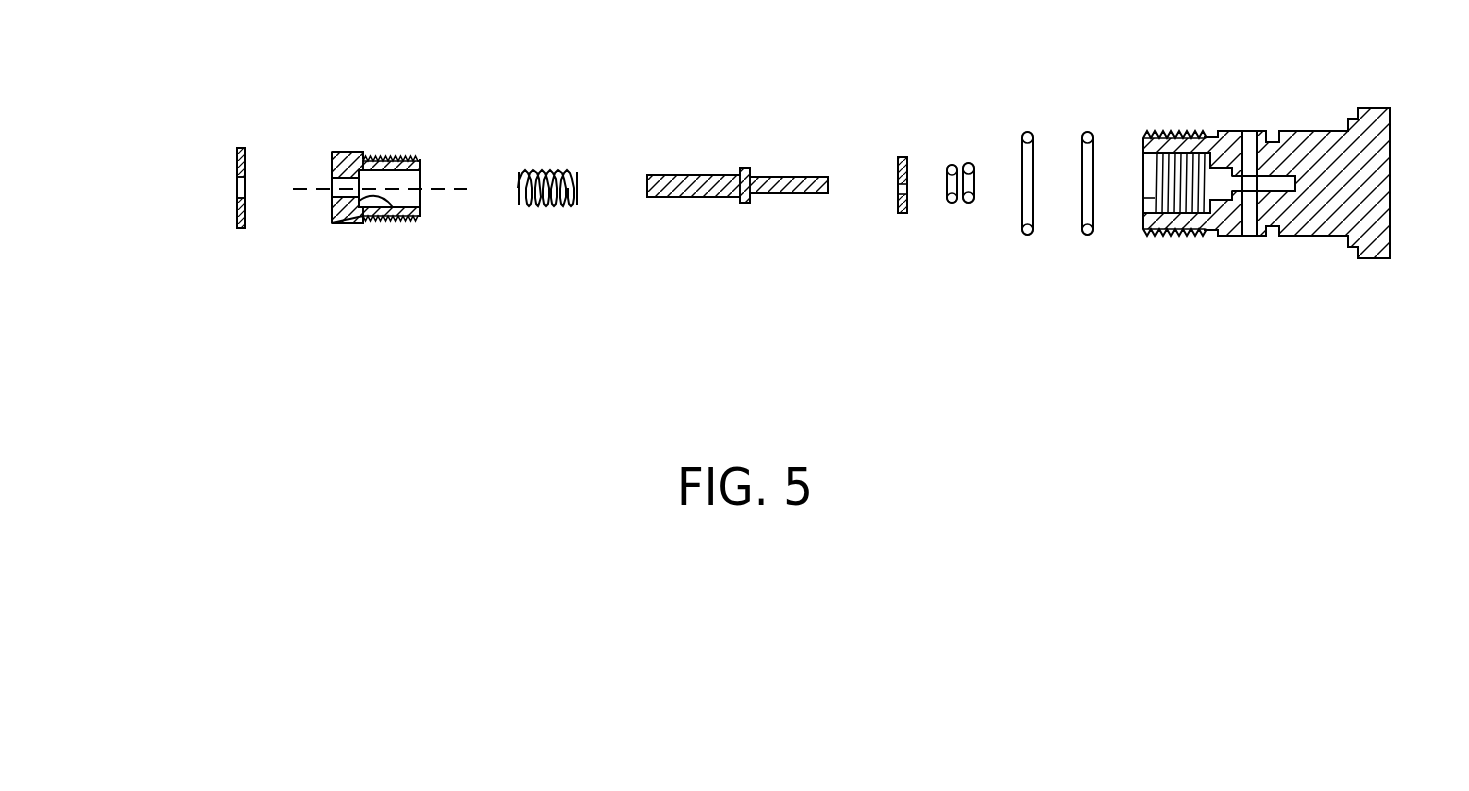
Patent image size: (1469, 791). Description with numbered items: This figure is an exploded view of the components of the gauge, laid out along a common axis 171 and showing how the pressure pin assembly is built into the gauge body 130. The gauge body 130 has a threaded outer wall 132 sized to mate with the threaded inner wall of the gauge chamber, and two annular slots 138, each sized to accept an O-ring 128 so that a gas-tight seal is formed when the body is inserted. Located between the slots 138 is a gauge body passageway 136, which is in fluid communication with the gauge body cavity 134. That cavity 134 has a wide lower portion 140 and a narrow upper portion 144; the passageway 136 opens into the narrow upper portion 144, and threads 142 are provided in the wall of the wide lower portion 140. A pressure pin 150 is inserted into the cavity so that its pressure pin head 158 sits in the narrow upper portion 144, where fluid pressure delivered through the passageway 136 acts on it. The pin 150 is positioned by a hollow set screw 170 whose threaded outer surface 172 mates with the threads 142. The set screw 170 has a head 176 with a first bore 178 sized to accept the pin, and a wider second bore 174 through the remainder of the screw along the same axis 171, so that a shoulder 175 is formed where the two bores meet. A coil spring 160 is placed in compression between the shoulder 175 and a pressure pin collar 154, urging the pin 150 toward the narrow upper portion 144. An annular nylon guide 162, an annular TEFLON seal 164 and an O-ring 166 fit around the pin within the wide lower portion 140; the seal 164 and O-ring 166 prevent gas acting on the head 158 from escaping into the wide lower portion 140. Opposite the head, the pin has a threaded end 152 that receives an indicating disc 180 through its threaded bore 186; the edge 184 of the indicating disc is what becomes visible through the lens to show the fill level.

The O-ring 128 is at (1087, 236).
The gauge body 130 is at (1390, 148).
The threaded outer wall 132 is at (1167, 235).
The gauge body cavity 134 is at (1154, 197).
The gauge body passageway 136 is at (1253, 133).
The slots 138 is at (1273, 236).
The wide lower portion 140 is at (1168, 140).
The threads 142 is at (1157, 186).
The narrow upper portion 144 is at (1288, 180).
The pressure pin 150 is at (692, 198).
The threaded end 152 is at (647, 185).
The pressure pin collar 154 is at (742, 168).
The pressure pin head 158 is at (828, 185).
The coil spring 160 is at (540, 207).
The annular nylon guide 162 is at (900, 213).
The annular TEFLON seal 164 is at (950, 203).
The O-ring 166 is at (968, 163).
The hollow set screw 170 is at (390, 236).
The axis 171 is at (444, 190).
The threaded outer surface 172 is at (387, 158).
The second bore 174 is at (412, 188).
The shoulder 175 is at (388, 216).
The head 176 is at (343, 225).
The first bore 178 is at (333, 188).
The indicating disc 180 is at (242, 230).
The edge 184 is at (244, 148).
The threaded bore 186 is at (238, 190).